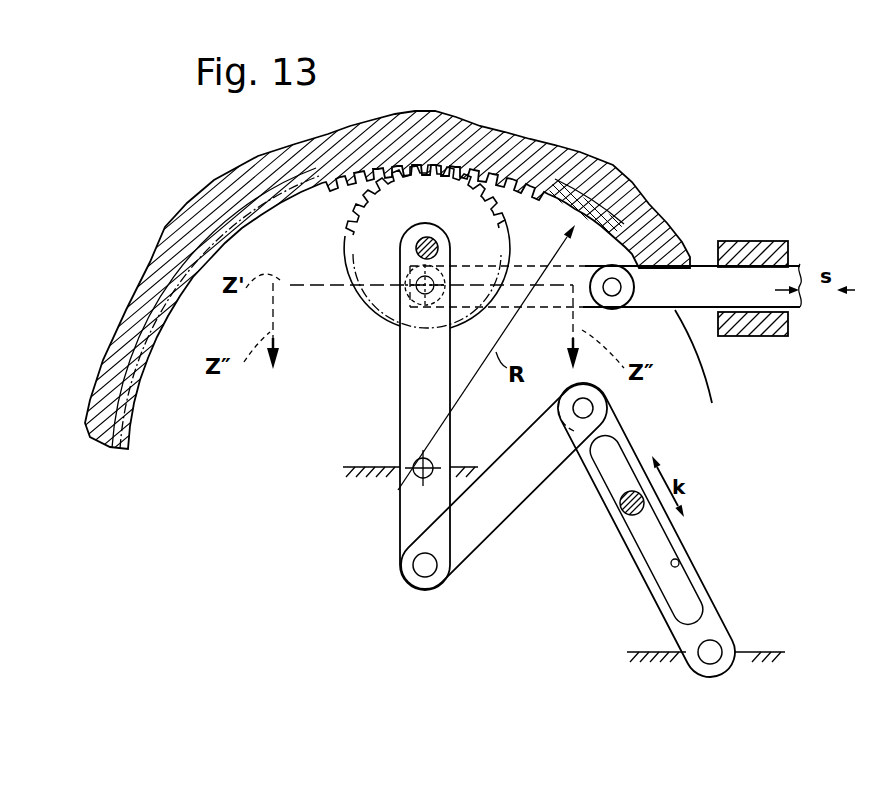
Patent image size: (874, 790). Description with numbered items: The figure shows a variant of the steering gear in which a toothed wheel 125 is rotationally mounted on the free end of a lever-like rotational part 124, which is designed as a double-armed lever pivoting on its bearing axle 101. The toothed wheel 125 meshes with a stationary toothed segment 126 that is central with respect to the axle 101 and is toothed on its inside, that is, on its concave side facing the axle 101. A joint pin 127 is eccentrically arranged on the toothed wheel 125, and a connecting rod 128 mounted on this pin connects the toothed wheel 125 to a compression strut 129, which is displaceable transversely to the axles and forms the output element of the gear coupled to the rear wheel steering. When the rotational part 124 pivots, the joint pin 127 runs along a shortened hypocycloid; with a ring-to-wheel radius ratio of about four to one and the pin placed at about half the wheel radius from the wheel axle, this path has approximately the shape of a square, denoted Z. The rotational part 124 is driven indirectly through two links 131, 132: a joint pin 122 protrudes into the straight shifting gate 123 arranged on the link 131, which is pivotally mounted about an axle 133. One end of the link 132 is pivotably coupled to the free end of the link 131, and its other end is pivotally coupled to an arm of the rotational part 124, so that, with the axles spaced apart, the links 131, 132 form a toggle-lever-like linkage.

The axle 101 is at (398, 495).
The joint pin 122 is at (630, 516).
The straight shifting gate 123 is at (688, 563).
The lever-like rotational part 124 is at (417, 373).
The toothed wheel 125 is at (370, 252).
The toothed segment 126 is at (147, 383).
The joint pin 127 is at (400, 322).
The connecting rod 128 is at (582, 280).
The compression strut 129 is at (703, 283).
The link 131 is at (707, 601).
The link 132 is at (475, 523).
The axle 133 is at (710, 661).